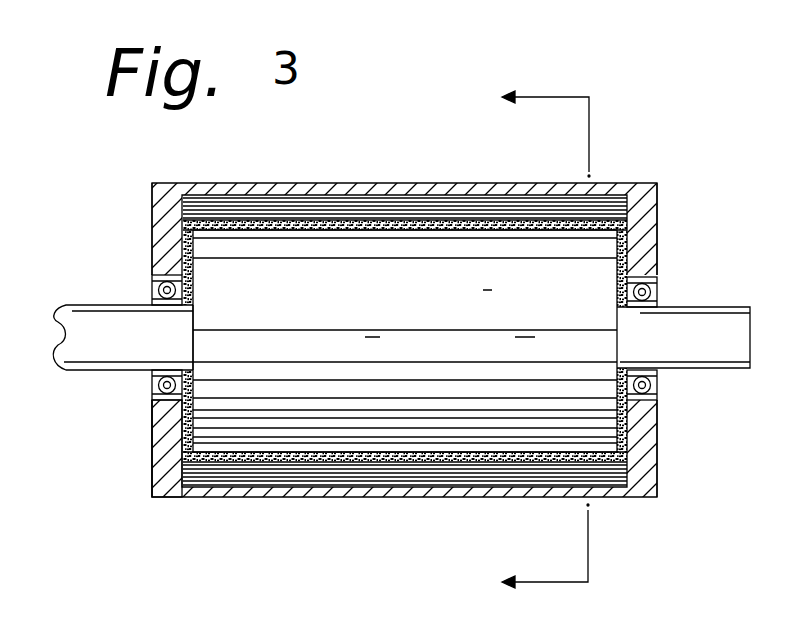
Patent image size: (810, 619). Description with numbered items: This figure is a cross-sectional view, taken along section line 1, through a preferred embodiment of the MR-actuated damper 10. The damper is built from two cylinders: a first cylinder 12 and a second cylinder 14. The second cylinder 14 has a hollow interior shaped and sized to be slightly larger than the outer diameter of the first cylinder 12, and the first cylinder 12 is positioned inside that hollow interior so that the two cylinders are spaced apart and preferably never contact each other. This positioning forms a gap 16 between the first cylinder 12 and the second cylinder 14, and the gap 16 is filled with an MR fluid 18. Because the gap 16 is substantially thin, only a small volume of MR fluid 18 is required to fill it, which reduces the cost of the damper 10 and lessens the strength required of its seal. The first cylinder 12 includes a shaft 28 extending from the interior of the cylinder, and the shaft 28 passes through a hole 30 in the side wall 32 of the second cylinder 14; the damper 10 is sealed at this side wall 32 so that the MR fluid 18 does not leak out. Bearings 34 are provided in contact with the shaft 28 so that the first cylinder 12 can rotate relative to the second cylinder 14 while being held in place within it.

The section line 1- 1 is at (527, 336).
The MR-actuated damper 10 is at (632, 173).
The first cylinder 12 is at (392, 377).
The second cylinder 14 is at (268, 497).
The gap 16 is at (438, 460).
The MR fluid 18 is at (500, 470).
The shaft 28 is at (100, 347).
The hole 30 is at (166, 337).
The side wall 32 is at (165, 450).
The bearings 34 is at (656, 290).